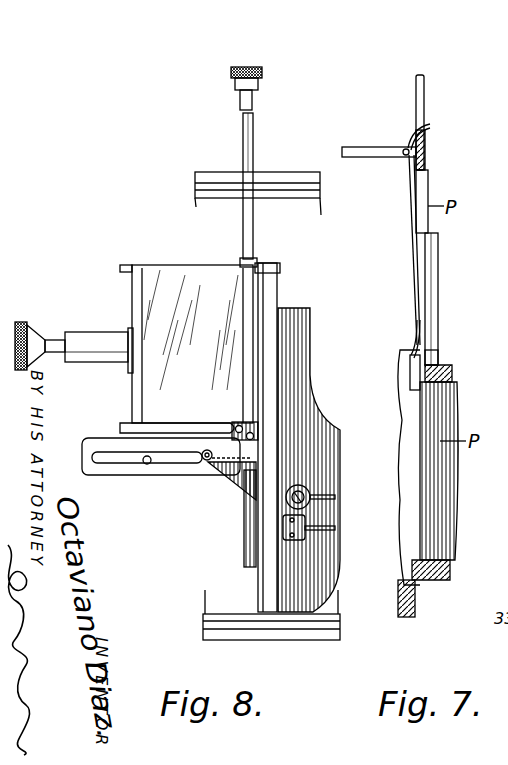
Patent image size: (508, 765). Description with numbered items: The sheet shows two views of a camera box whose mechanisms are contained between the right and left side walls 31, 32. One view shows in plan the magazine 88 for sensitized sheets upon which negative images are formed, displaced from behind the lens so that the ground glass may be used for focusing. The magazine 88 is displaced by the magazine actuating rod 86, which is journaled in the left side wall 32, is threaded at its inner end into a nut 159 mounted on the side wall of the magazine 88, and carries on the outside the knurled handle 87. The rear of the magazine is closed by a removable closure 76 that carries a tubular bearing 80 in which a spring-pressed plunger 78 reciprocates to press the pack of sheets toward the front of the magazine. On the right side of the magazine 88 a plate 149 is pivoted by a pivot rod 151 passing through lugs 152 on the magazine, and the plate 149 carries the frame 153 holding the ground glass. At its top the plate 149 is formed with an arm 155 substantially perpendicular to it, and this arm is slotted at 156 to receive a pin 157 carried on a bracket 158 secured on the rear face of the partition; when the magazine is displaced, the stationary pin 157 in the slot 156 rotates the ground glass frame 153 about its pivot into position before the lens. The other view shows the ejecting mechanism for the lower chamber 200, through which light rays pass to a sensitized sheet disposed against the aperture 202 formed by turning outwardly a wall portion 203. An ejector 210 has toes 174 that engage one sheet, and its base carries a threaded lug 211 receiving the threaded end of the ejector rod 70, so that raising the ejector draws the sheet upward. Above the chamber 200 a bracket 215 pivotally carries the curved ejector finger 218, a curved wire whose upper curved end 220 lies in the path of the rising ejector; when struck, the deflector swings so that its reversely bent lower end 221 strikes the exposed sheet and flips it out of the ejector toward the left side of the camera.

In FIG. 8, the right side wall 31 is at (248, 634).
In FIG. 8, the left side wall 32 is at (285, 178).
In FIG. 7, the ejector rod 70 is at (448, 113).
In FIG. 8, the closure 76 is at (128, 380).
In FIG. 8, the plunger 78 is at (52, 340).
In FIG. 8, the tubular bearing 80 is at (92, 342).
In FIG. 8, the magazine actuating rod 86 is at (253, 134).
In FIG. 8, the knurled handle 87 is at (258, 82).
In FIG. 8, the magazine 88 is at (160, 270).
In FIG. 8, the plate 149 is at (265, 450).
In FIG. 8, the pivot rod 151 is at (241, 426).
In FIG. 8, the lugs 152 is at (237, 426).
In FIG. 8, the frame 153 is at (244, 542).
In FIG. 8, the arm 155 is at (120, 448).
In FIG. 8, the slot 156 is at (147, 464).
In FIG. 8, the pin 157 is at (190, 470).
In FIG. 8, the bracket 158 is at (230, 478).
In FIG. 8, the nut 159 is at (240, 262).
In FIG. 7, the toes 174 is at (438, 352).
In FIG. 7, the chamber 200 is at (400, 538).
In FIG. 7, the aperture 202 is at (415, 480).
In FIG. 7, the outwardly turned wall portion 203 is at (410, 388).
In FIG. 7, the ejector 210 is at (428, 152).
In FIG. 7, the threaded lug 211 is at (425, 100).
In FIG. 7, the bracket 215 is at (375, 140).
In FIG. 7, the curved ejector finger 218 is at (414, 215).
In FIG. 7, the curved end 220 is at (410, 135).
In FIG. 7, the lower end 221 is at (413, 330).